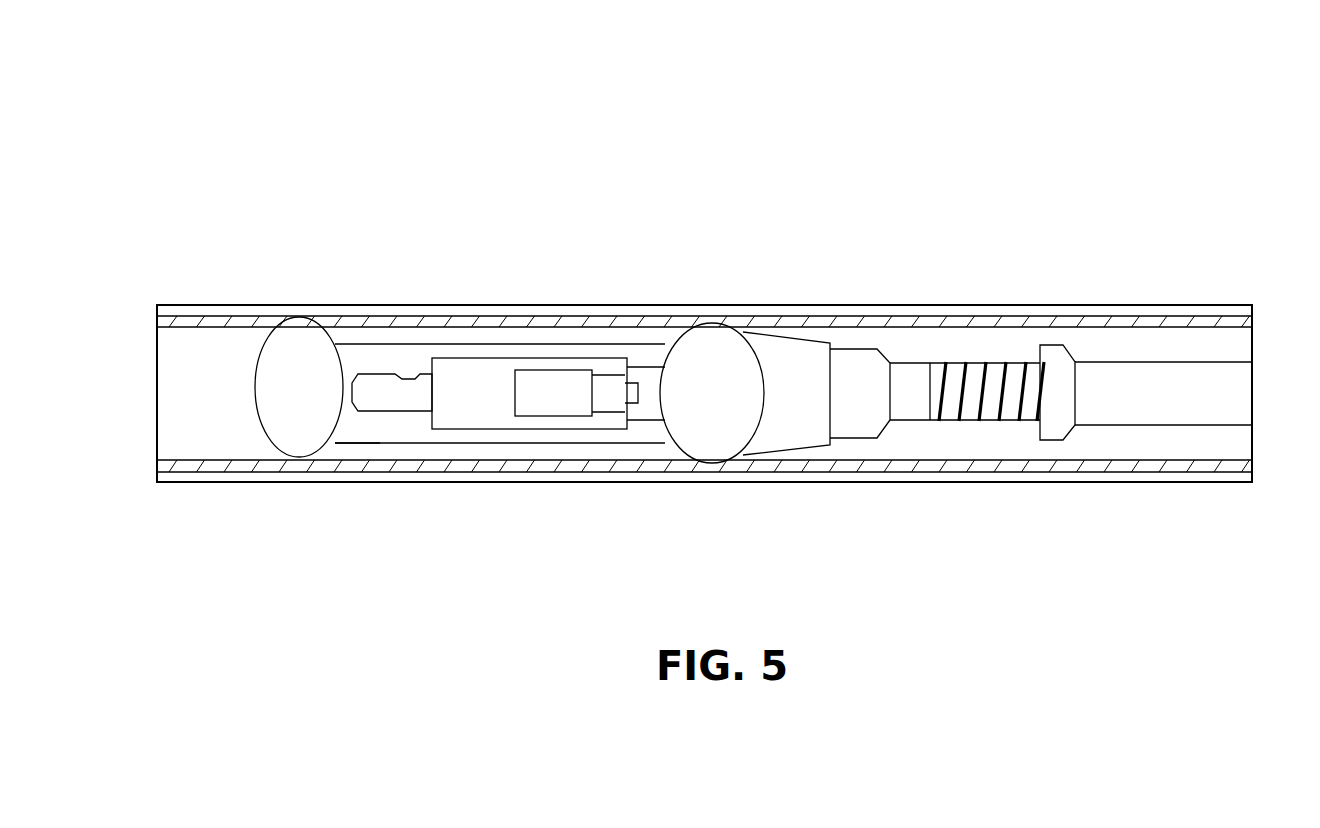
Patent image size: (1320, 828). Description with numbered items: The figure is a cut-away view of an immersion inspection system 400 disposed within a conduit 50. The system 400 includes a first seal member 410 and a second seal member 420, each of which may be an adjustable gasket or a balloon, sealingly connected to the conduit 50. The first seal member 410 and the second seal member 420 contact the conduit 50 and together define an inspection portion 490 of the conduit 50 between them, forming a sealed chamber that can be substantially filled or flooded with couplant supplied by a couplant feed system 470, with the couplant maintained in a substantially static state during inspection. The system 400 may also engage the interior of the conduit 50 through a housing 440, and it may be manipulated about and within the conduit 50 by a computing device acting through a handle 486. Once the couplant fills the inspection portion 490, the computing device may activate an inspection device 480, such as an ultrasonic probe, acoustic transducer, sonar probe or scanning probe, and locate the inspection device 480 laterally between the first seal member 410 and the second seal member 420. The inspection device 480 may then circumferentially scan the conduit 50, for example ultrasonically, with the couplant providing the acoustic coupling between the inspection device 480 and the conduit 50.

The immersion inspection system 400 is at (278, 140).
The conduit 50 is at (878, 313).
The housing 440 is at (433, 325).
The couplant feed system 470 is at (377, 393).
The inspection device 480 is at (557, 390).
The inspection portion 490 is at (357, 430).
The second seal member 420 is at (277, 408).
The first seal member 410 is at (686, 408).
The handle 486 is at (1142, 390).